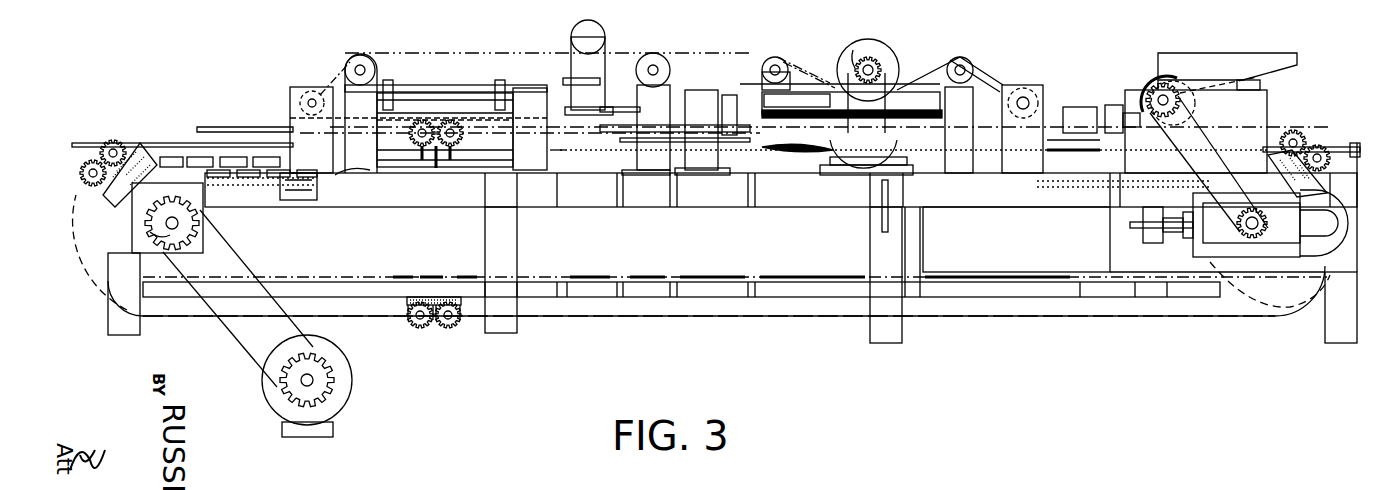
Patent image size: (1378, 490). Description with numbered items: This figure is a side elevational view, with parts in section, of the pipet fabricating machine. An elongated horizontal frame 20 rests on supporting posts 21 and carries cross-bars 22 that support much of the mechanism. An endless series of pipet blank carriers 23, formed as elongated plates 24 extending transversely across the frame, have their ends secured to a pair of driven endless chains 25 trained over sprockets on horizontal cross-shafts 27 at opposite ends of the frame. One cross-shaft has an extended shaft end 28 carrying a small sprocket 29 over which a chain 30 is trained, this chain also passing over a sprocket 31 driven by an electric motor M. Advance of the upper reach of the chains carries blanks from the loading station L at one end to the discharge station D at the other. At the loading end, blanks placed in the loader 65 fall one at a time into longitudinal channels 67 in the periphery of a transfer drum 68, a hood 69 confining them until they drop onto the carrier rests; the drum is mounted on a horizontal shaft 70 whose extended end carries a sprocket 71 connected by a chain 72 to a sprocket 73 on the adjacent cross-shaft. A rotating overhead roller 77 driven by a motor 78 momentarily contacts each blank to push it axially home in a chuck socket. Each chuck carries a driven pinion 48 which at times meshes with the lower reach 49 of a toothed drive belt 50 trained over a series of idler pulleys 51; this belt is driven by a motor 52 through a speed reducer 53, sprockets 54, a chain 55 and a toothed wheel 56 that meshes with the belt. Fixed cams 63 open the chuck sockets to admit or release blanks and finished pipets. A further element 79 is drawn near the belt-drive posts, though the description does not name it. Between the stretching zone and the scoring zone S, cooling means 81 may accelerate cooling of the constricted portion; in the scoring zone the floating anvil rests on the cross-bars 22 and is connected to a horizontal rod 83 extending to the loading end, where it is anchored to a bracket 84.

The frame 20 is at (796, 216).
The supporting posts 21 is at (108, 332).
The cross-bars 22 is at (305, 178).
The pipet blank carriers 23 is at (153, 140).
The plates 24 is at (103, 205).
The endless chains 25 is at (343, 176).
The cross-shafts 27 is at (1255, 240).
The shaft end 28 is at (172, 200).
The small sprocket 29 is at (150, 232).
The chain 30 is at (262, 250).
The sprocket 31 is at (325, 380).
The driven pinion 48 is at (100, 160).
The lower reach 49 is at (630, 120).
The toothed drive belt 50 is at (531, 47).
The idler pulleys 51 is at (345, 65).
The motor 52 is at (770, 158).
The speed reducer 53 is at (902, 155).
The sprockets 54 is at (848, 68).
The chain 55 is at (888, 58).
The toothed wheel 56 is at (852, 52).
The fixed cam 63 is at (232, 218).
The loader 65 is at (1276, 85).
The longitudinal channels 67 is at (1158, 82).
The transfer drum 68 is at (1150, 85).
The hood 69 is at (1142, 92).
The horizontal shaft 70 is at (1166, 95).
The sprocket 71 is at (1182, 98).
The chain 72 is at (1195, 115).
The sprocket 73 is at (1268, 225).
The overhead roller 77 is at (1112, 107).
The motor 78 is at (1080, 135).
The bracket 79 is at (736, 132).
The cooling means 81 is at (605, 70).
The horizontal rod 83 is at (550, 150).
The bracket 84 is at (1357, 147).
The discharge station D is at (254, 120).
The scoring zone S is at (459, 78).
The loading station L is at (1229, 51).
The electric motor M is at (345, 362).